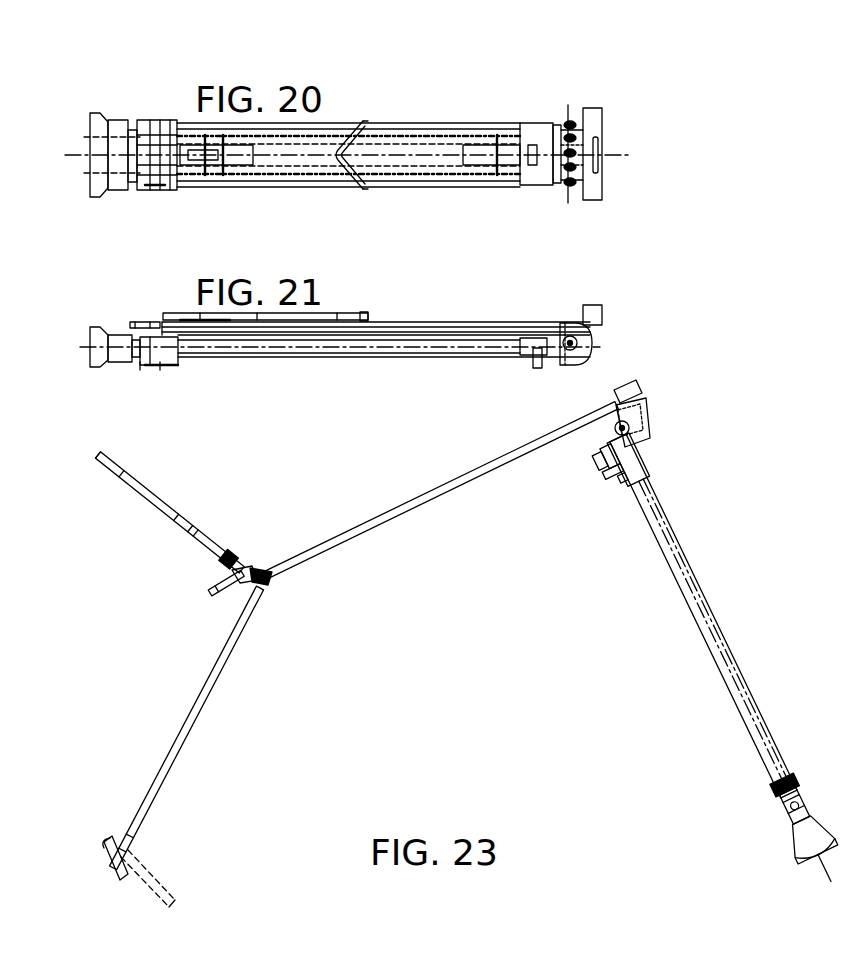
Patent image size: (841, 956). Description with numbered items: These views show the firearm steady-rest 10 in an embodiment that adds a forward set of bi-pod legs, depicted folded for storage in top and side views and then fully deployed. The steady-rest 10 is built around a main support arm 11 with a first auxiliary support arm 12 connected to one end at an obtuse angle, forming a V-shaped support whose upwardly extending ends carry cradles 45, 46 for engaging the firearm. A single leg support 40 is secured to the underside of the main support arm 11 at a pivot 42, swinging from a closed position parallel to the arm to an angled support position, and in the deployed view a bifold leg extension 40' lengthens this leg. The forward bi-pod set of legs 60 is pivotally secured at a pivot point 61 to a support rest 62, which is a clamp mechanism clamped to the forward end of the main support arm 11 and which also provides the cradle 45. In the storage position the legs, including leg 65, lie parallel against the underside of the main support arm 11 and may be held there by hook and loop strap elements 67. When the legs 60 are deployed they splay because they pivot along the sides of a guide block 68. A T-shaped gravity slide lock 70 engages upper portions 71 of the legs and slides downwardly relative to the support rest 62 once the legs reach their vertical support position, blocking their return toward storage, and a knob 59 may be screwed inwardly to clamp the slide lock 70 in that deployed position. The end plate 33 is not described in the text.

In FIG. 20, the firearm steady-rest 10 is at (447, 102).
In FIG. 21, the firearm steady-rest 10 is at (507, 315).
In FIG. 23, the firearm steady-rest 10 is at (423, 543).
In FIG. 21, the main support arm 11 is at (430, 318).
In FIG. 23, the main support arm 11 is at (457, 480).
In FIG. 21, the first auxiliary support arm 12 is at (305, 310).
In FIG. 23, the first auxiliary support arm 12 is at (152, 497).
In FIG. 20, the mounting plate 33 is at (598, 140).
In FIG. 23, the single leg support 40 is at (221, 733).
In FIG. 23, the bifold leg extension 40' is at (208, 865).
In FIG. 23, the pivot 42 is at (267, 575).
In FIG. 20, the cradle 45 is at (593, 107).
In FIG. 21, the cradle 45 is at (593, 308).
In FIG. 23, the cradle 45 is at (627, 387).
In FIG. 20, the cradle 46 is at (357, 121).
In FIG. 21, the cradle 46 is at (364, 312).
In FIG. 23, the cradle 46 is at (113, 460).
In FIG. 23, the knob 59 is at (588, 460).
In FIG. 21, the bi-pod set of legs 60 is at (360, 358).
In FIG. 23, the bi-pod set of legs 60 is at (713, 668).
In FIG. 21, the pivot point 61 is at (593, 350).
In FIG. 23, the pivot point 61 is at (607, 438).
In FIG. 23, the support rest 62 is at (638, 398).
In FIG. 23, the leg 65 is at (688, 617).
In FIG. 20, the hook and loop strap elements 67 is at (160, 187).
In FIG. 21, the hook and loop strap elements 67 is at (173, 366).
In FIG. 21, the guide block 68 is at (590, 333).
In FIG. 23, the guide block 68 is at (637, 420).
In FIG. 21, the gravity slide lock 70 is at (555, 360).
In FIG. 23, the gravity slide lock 70 is at (617, 473).
In FIG. 23, the upper portions 71 is at (637, 453).